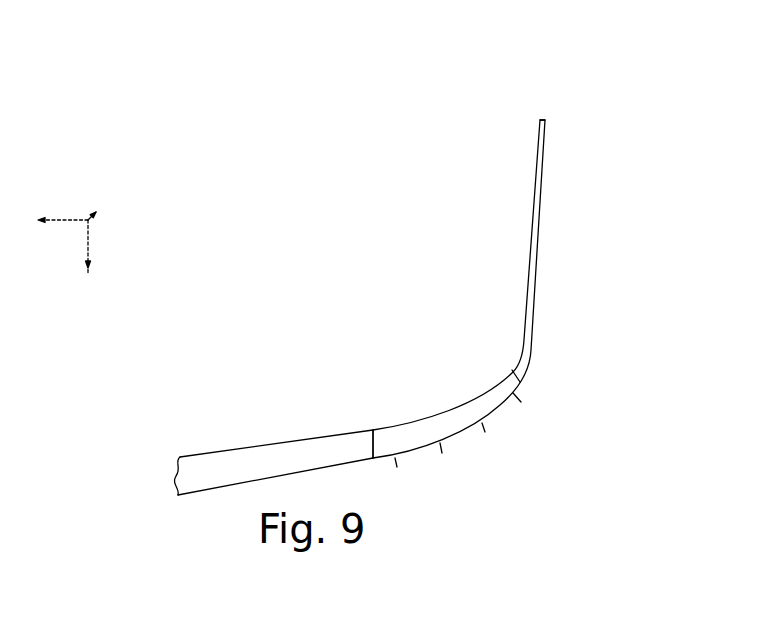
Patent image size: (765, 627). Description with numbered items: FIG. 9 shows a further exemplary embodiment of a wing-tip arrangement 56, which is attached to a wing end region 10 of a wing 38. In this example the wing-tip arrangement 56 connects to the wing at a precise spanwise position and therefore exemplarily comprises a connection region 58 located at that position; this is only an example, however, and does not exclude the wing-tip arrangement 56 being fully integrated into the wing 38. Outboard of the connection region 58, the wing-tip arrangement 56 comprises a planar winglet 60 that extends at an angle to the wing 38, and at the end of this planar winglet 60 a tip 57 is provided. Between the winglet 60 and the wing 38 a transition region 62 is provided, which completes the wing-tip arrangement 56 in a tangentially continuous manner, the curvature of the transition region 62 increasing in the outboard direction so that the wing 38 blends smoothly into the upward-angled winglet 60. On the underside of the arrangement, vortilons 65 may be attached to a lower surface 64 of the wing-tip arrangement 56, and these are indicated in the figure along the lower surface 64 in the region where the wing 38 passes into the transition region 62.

The wing end region 10 is at (367, 429).
The wing 38 is at (223, 470).
The wing-tip arrangement 56 is at (207, 132).
The tip 57 is at (548, 113).
The connection region 58 is at (378, 428).
The planar winglet 60 is at (540, 232).
The transition region 62 is at (513, 393).
The lower surface 64 is at (460, 432).
The vortilons 65 is at (527, 407).